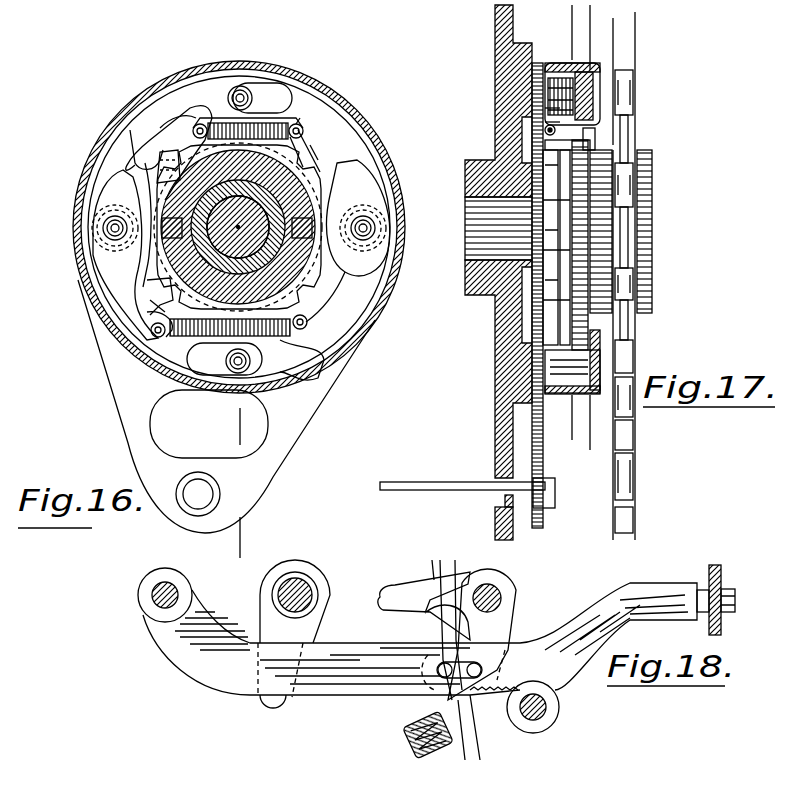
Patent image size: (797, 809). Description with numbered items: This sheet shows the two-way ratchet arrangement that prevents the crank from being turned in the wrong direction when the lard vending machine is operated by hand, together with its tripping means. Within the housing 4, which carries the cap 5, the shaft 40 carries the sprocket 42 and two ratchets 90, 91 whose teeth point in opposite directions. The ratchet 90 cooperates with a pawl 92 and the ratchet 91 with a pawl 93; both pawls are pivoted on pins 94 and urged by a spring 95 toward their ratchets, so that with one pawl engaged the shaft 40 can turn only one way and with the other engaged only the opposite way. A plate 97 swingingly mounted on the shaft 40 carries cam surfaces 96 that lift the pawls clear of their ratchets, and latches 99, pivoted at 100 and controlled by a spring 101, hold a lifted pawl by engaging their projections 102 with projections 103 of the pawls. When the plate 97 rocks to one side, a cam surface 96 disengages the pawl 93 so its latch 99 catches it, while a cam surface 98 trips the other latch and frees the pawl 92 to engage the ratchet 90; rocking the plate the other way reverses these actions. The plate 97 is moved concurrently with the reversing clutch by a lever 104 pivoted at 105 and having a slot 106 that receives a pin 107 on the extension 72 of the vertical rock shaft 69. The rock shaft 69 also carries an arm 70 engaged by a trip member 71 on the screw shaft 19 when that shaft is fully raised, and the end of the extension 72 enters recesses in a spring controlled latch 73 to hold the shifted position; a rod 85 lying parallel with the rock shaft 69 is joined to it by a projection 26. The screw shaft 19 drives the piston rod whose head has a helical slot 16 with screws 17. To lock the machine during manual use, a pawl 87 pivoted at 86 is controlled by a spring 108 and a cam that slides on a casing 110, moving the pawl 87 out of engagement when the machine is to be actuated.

In FIG. 17, the housing 4 is at (503, 435).
In FIG. 17, the cap 5 is at (495, 30).
In FIG. 17, the helical slot 16 is at (552, 266).
In FIG. 16, the screws 17 is at (240, 82).
In FIG. 17, the screw shaft 19 is at (595, 238).
In FIG. 18, the screw shaft 19 is at (310, 585).
In FIG. 18, the projection 26 is at (460, 648).
In FIG. 16, the shaft 40 is at (220, 222).
In FIG. 17, the shaft 40 is at (485, 236).
In FIG. 17, the sprocket 42 is at (633, 42).
In FIG. 18, the rock shaft 69 is at (497, 598).
In FIG. 18, the arm 70 is at (415, 585).
In FIG. 18, the trip member 71 is at (276, 702).
In FIG. 18, the extension 72 is at (488, 648).
In FIG. 18, the spring controlled latch 73 is at (483, 715).
In FIG. 18, the rod 85 is at (432, 560).
In FIG. 18, the pivot 86 is at (302, 790).
In FIG. 17, the pawl 87 is at (600, 118).
In FIG. 18, the pawl 87 is at (203, 798).
In FIG. 16, the ratchet 90 is at (150, 262).
In FIG. 17, the ratchet 90 is at (545, 140).
In FIG. 16, the ratchet 91 is at (158, 268).
In FIG. 17, the ratchet 91 is at (600, 136).
In FIG. 16, the pawl 92 is at (165, 305).
In FIG. 16, the pawl 93 is at (345, 322).
In FIG. 16, the pins 94 is at (110, 229).
In FIG. 16, the spring 95 is at (170, 342).
In FIG. 16, the cam surfaces 96 is at (160, 325).
In FIG. 16, the plate 97 is at (128, 410).
In FIG. 17, the plate 97 is at (538, 295).
In FIG. 18, the plate 97 is at (722, 572).
In FIG. 16, the cam surfaces 98 is at (310, 145).
In FIG. 16, the latches 99 is at (335, 160).
In FIG. 16, the pivot 100 is at (330, 185).
In FIG. 17, the pivot 100 is at (545, 122).
In FIG. 16, the spring 101 is at (300, 118).
In FIG. 17, the spring 101 is at (545, 108).
In FIG. 16, the projections 102 is at (135, 143).
In FIG. 16, the projections 103 is at (160, 128).
In FIG. 16, the lever 104 is at (212, 500).
In FIG. 17, the lever 104 is at (380, 486).
In FIG. 18, the lever 104 is at (210, 667).
In FIG. 18, the pivot 105 is at (155, 608).
In FIG. 18, the slot 106 is at (440, 664).
In FIG. 18, the pin 107 is at (450, 748).
In FIG. 17, the spring 108 is at (548, 92).
In FIG. 16, the casing 110 is at (262, 83).
In FIG. 17, the casing 110 is at (600, 66).